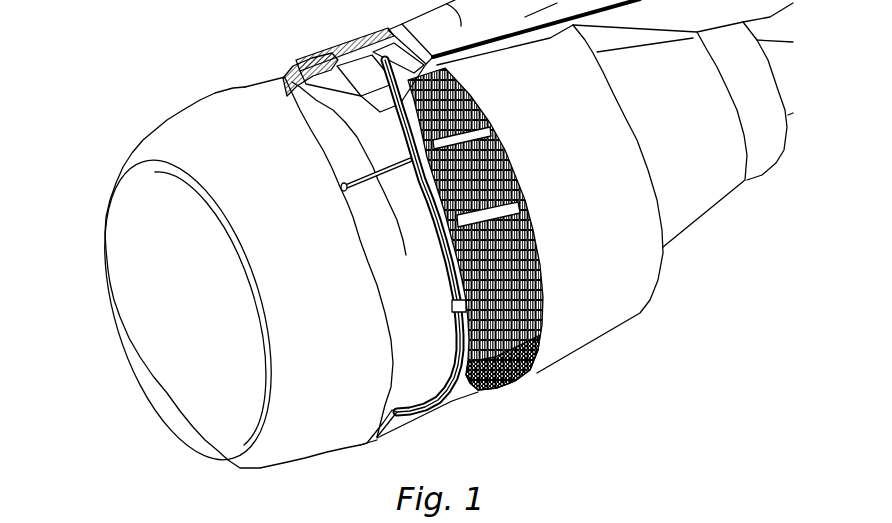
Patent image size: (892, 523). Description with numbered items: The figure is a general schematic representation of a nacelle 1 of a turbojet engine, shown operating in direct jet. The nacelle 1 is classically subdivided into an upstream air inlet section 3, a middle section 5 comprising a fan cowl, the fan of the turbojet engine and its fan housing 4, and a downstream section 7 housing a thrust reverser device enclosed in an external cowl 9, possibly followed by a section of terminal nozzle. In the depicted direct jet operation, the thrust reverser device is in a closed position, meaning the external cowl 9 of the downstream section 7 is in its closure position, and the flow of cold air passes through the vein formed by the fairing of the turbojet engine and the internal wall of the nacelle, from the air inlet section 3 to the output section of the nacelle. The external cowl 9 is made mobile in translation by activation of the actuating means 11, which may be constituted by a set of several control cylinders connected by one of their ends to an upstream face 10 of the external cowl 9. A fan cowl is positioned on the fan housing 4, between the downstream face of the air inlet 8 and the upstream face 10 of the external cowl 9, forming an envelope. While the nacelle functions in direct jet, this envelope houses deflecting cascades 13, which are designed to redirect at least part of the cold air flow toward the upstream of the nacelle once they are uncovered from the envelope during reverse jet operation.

The nacelle 1 is at (152, 73).
The air inlet section 3 is at (157, 152).
The fan housing 4 is at (332, 140).
The middle section 5 is at (338, 55).
The downstream section 7 is at (592, 323).
The air inlet 8 is at (393, 415).
The external cowl 9 is at (640, 272).
The upstream face of the external cowl 10 is at (543, 325).
The actuating means 11 is at (430, 408).
The deflecting cascades 13 is at (527, 377).